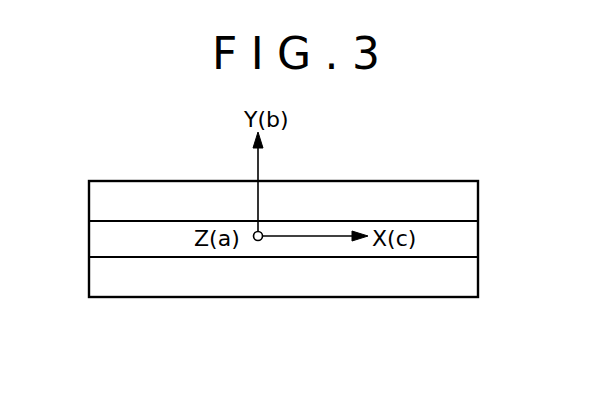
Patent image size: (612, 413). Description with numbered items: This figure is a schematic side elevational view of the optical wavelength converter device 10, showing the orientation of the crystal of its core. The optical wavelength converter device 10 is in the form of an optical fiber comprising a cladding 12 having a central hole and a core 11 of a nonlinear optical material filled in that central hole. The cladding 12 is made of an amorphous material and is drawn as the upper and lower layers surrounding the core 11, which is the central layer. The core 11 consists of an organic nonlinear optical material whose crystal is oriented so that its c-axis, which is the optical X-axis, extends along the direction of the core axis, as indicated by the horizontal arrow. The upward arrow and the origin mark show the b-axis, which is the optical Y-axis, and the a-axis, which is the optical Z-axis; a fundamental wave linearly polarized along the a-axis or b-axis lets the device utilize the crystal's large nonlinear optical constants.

The optical wavelength converter device 10 is at (137, 161).
The core 11 is at (167, 248).
The cladding 12 is at (197, 195).